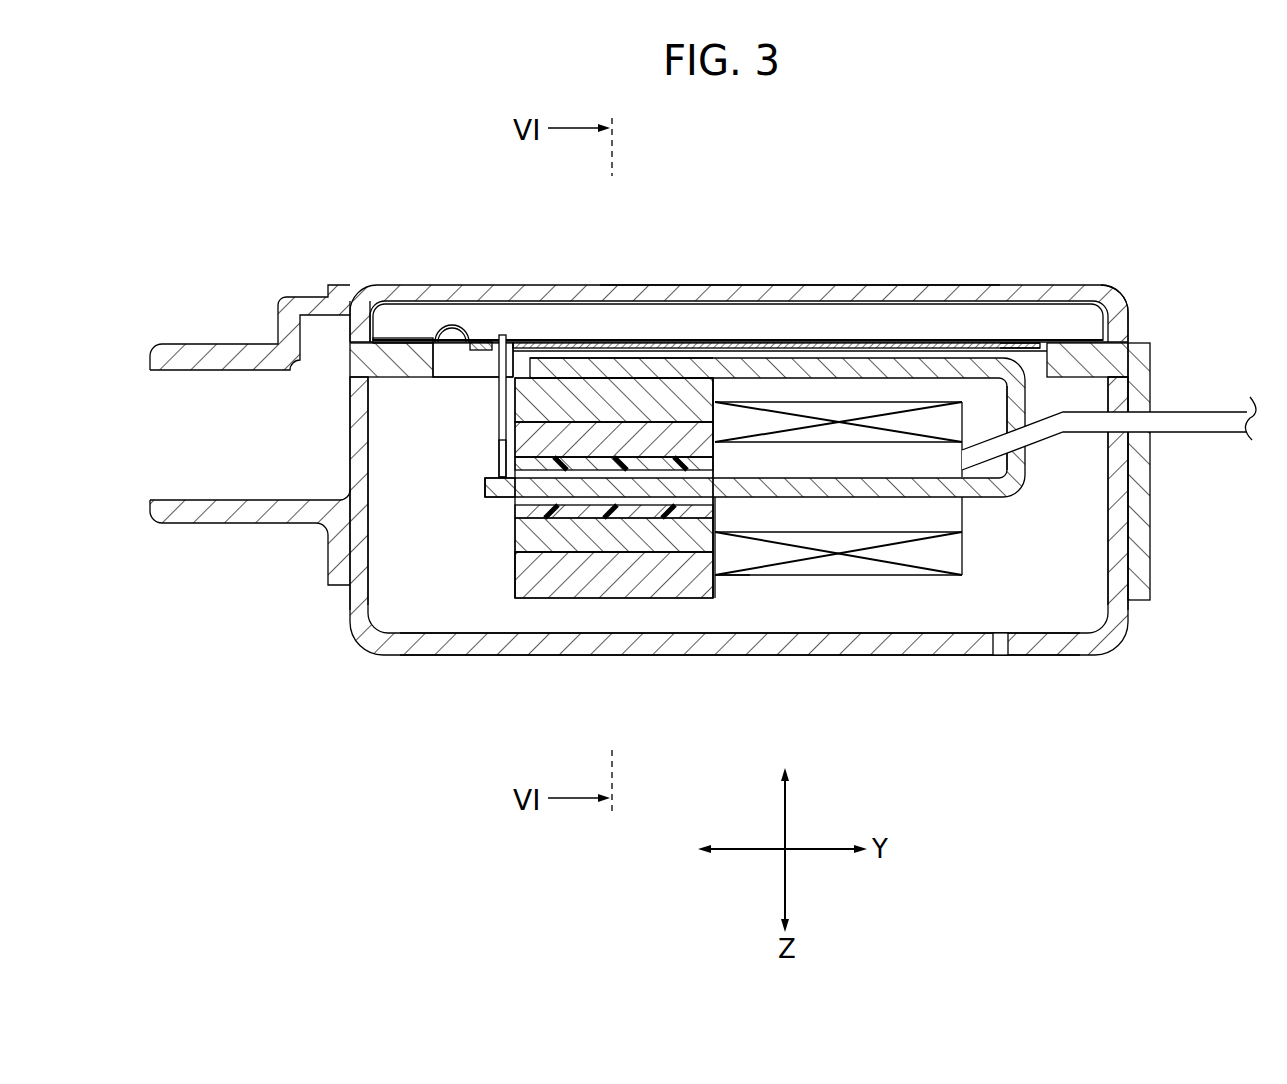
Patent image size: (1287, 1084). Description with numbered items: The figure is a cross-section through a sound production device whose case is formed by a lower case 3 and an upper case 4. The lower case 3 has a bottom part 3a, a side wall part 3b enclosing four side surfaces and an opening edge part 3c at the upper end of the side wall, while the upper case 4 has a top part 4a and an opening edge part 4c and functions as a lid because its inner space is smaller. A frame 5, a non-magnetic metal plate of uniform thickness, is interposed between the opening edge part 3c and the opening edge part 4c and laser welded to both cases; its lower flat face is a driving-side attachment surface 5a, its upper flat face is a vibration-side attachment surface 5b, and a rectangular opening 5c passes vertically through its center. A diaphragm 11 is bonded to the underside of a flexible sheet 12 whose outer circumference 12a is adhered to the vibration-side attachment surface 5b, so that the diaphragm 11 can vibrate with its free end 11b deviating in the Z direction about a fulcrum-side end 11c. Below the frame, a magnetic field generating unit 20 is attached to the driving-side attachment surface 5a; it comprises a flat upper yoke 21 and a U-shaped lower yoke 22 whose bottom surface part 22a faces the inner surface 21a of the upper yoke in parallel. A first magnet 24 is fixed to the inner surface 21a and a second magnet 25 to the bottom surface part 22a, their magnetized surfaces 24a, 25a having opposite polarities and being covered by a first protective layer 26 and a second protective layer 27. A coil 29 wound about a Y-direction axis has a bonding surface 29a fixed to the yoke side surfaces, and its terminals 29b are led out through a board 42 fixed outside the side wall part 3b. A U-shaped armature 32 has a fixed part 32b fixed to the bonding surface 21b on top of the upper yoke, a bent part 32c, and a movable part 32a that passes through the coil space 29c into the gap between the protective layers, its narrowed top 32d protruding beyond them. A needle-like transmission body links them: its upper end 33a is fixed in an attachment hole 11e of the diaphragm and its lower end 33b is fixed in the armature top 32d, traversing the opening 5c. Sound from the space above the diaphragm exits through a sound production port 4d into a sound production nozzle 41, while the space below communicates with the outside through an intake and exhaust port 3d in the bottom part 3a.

The lower case 3 is at (1132, 640).
The bottom part 3a is at (687, 650).
The side wall part 3b is at (360, 553).
The opening edge part 3c is at (1113, 372).
The intake and exhaust port 3d is at (999, 656).
The upper case 4 is at (1095, 287).
The top part 4a is at (912, 290).
The opening edge part 4c is at (1125, 350).
The sound production port 4d is at (353, 328).
The frame 5 is at (1098, 362).
The driving-side attachment surface 5a is at (450, 367).
The vibration-side attachment surface 5b is at (713, 430).
The opening 5c is at (447, 377).
The diaphragm 11 is at (935, 326).
The free end 11b is at (478, 341).
The fulcrum-side end 11c is at (1032, 339).
The attachment hole 11e is at (517, 346).
The flexible sheet 12 is at (452, 331).
The outer circumference 12a is at (410, 338).
The magnetic field generating unit 20 is at (719, 608).
The upper yoke 21 is at (667, 435).
The inner surface 21a is at (743, 412).
The bonding surface 21b is at (690, 433).
The lower yoke 22 is at (672, 535).
The bottom surface part 22a is at (598, 545).
The first magnet 24 is at (680, 400).
The magnetized surface 24a is at (640, 455).
The second magnet 25 is at (575, 560).
The magnetized surface 25a is at (532, 570).
The first protective layer 26 is at (713, 468).
The second protective layer 27 is at (713, 505).
The coil 29 is at (933, 553).
The bonding surface 29a is at (713, 562).
The terminals 29b is at (1210, 428).
The space 29c is at (873, 510).
The armature 32 is at (1003, 500).
The movable part 32a is at (513, 490).
The fixed part 32b is at (577, 368).
The bent part 32c is at (1002, 420).
The top 32d is at (483, 487).
The upper end 33a is at (503, 336).
The lower end 33b is at (497, 450).
The sound production nozzle 41 is at (200, 492).
The board 42 is at (1140, 563).